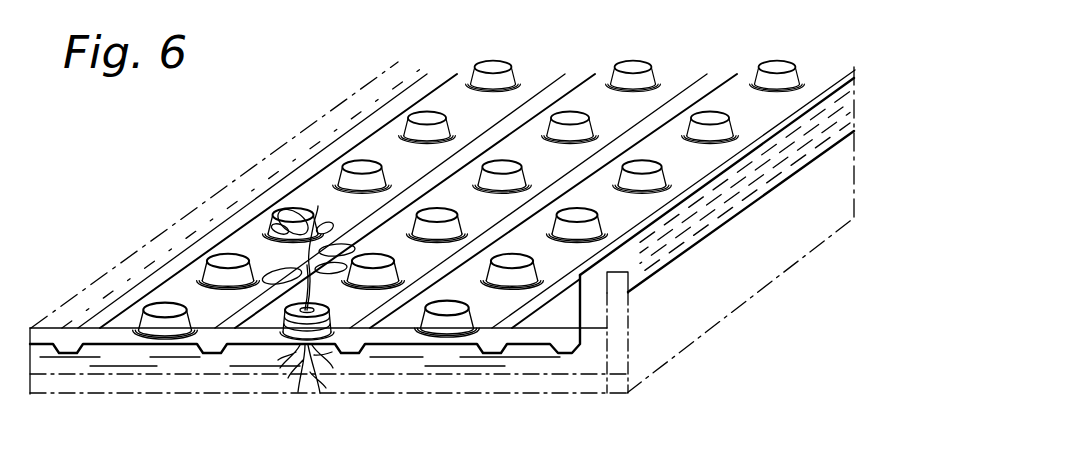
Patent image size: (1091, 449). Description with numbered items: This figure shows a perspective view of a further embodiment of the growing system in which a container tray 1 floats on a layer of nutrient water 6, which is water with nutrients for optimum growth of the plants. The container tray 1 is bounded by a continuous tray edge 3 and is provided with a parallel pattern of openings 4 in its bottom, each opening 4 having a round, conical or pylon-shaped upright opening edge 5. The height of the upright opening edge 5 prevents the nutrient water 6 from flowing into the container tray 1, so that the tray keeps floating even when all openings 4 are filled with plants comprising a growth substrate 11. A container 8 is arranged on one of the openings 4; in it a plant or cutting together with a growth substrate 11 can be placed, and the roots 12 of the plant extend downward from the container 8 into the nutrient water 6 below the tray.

The container tray 1 is at (55, 338).
The tray edge 3 is at (582, 303).
The openings 4 is at (208, 266).
The upright opening edge 5 is at (185, 265).
The nutrient water 6 is at (527, 358).
The container 8 is at (332, 316).
The growth substrate 11 is at (230, 256).
The roots 12 is at (285, 346).